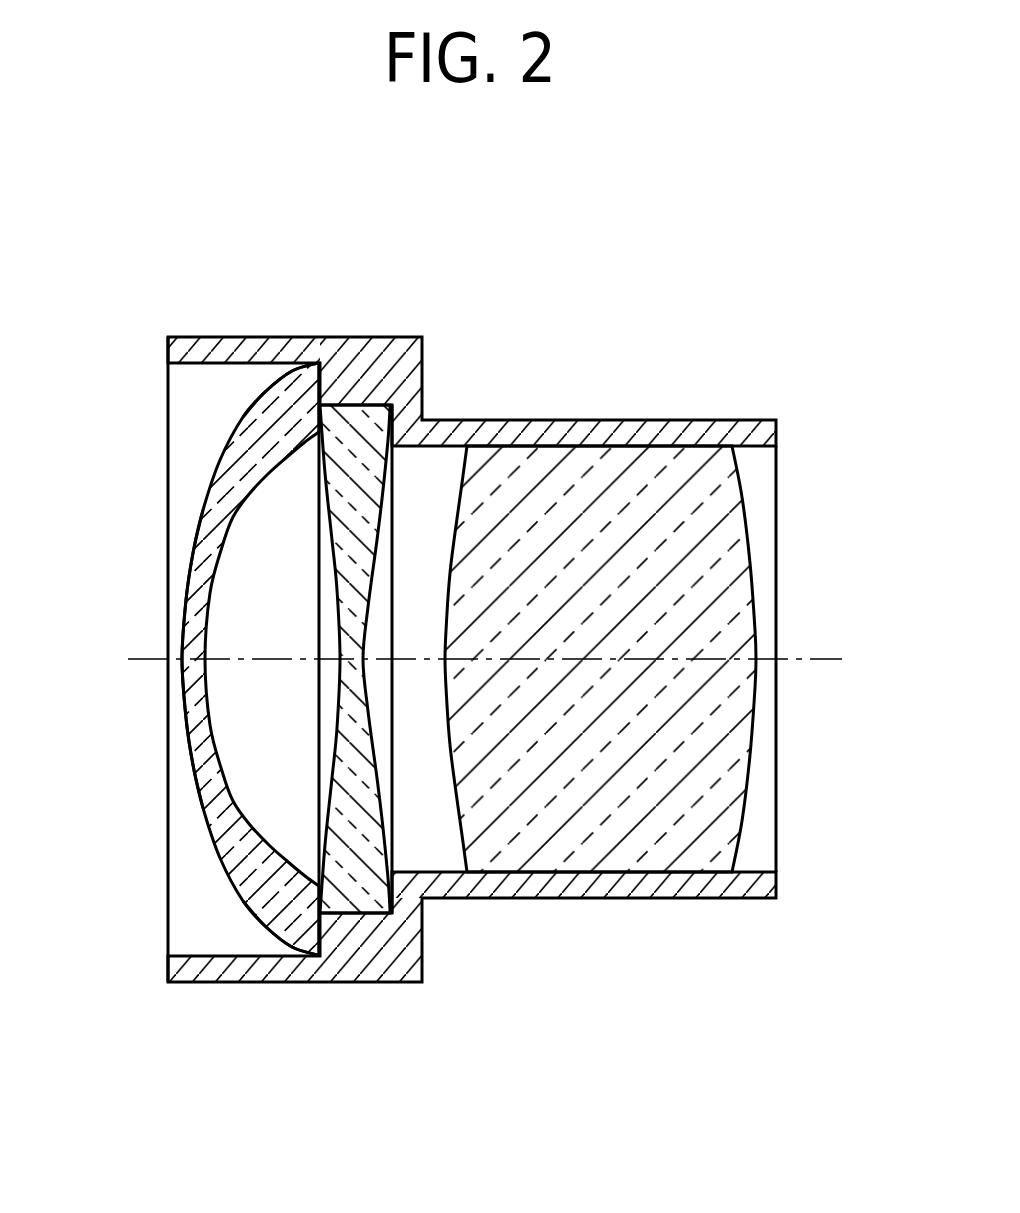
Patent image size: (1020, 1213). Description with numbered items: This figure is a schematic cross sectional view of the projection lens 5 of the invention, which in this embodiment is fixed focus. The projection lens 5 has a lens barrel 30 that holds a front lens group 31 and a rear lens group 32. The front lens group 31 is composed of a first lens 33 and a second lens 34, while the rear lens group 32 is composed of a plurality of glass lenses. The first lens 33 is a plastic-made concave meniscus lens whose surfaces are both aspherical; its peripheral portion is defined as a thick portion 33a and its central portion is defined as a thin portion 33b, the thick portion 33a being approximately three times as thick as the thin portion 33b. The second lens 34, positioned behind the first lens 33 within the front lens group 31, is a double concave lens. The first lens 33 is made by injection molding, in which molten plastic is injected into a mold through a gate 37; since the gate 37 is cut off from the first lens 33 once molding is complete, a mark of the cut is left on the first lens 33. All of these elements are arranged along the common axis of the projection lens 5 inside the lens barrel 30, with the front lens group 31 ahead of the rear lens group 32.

The projection lens 5 is at (622, 383).
The lens barrel 30 is at (388, 337).
The front lens group 31 is at (226, 745).
The rear lens group 32 is at (598, 845).
The first lens 33 is at (287, 925).
The thick portion 33a is at (265, 407).
The thin portion 33b is at (183, 675).
The second lens 34 is at (344, 915).
The gate 37 is at (825, 660).